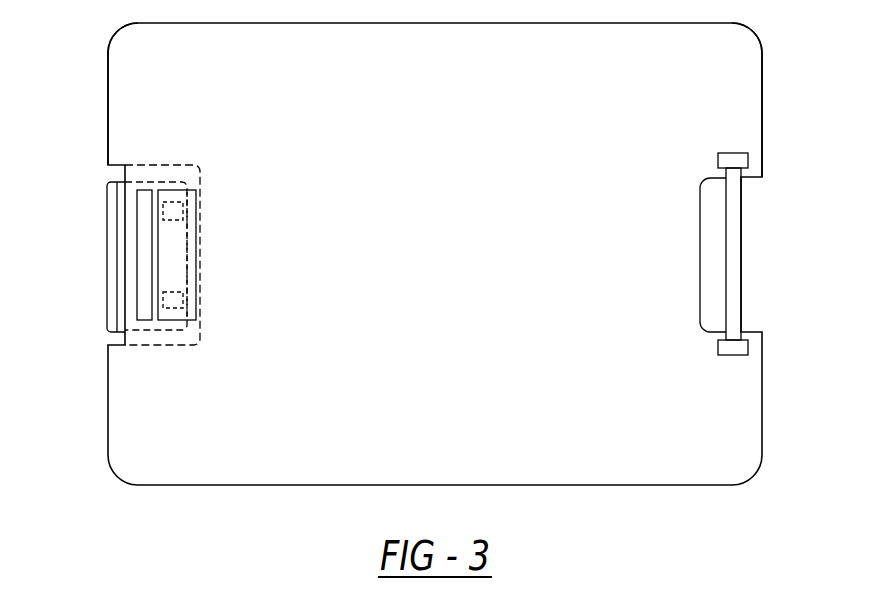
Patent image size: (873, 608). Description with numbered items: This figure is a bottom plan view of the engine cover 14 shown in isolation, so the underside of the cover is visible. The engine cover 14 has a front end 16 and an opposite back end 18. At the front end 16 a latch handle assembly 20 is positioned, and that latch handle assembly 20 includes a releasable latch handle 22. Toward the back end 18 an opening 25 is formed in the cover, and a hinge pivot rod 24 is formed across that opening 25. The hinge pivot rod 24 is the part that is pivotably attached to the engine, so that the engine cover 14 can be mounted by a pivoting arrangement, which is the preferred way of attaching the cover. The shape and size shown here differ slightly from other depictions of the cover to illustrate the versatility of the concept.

The engine cover 14 is at (424, 265).
The front end 16 is at (117, 97).
The back end 18 is at (730, 101).
The latch handle assembly 20 is at (110, 237).
The releasable latch handle 22 is at (110, 292).
The hinge pivot rod 24 is at (740, 256).
The opening 25 is at (752, 180).